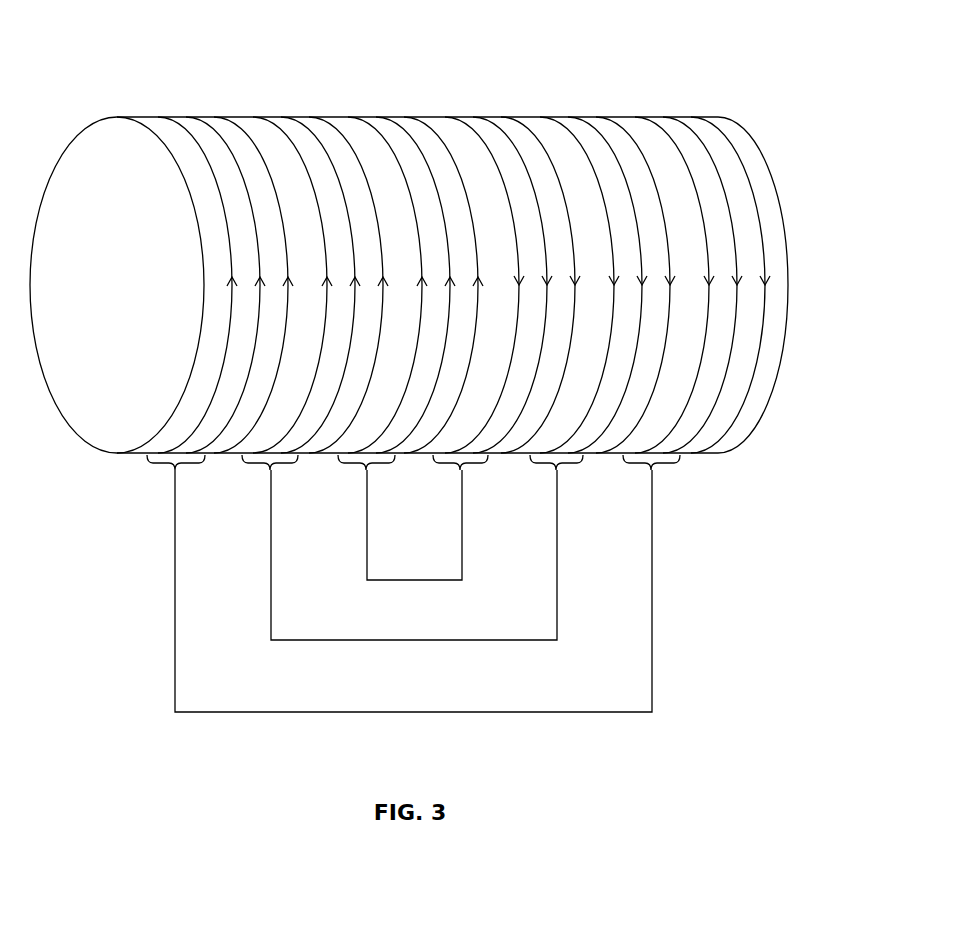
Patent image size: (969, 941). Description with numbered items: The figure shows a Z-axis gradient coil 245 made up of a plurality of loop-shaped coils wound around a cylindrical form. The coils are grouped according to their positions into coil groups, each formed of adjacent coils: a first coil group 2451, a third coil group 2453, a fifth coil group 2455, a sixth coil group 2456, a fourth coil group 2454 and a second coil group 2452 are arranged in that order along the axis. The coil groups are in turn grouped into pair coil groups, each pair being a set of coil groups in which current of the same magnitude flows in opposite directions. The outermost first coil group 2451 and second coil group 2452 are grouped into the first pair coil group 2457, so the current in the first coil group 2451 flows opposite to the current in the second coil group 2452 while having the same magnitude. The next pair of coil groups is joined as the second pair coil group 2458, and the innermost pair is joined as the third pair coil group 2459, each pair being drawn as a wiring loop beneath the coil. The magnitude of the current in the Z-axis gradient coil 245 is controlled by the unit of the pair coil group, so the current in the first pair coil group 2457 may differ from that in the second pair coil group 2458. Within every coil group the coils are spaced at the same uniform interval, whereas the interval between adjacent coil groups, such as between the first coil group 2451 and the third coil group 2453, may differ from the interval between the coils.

The Z-axis gradient coil 245 is at (409, 238).
The first coil group 2451 is at (202, 102).
The second coil group 2452 is at (696, 264).
The third coil group 2453 is at (242, 102).
The fourth coil group 2454 is at (583, 102).
The fifth coil group 2455 is at (338, 102).
The sixth coil group 2456 is at (488, 102).
The first pair coil group 2457 is at (652, 680).
The second pair coil group 2458 is at (557, 608).
The third pair coil group 2459 is at (462, 533).